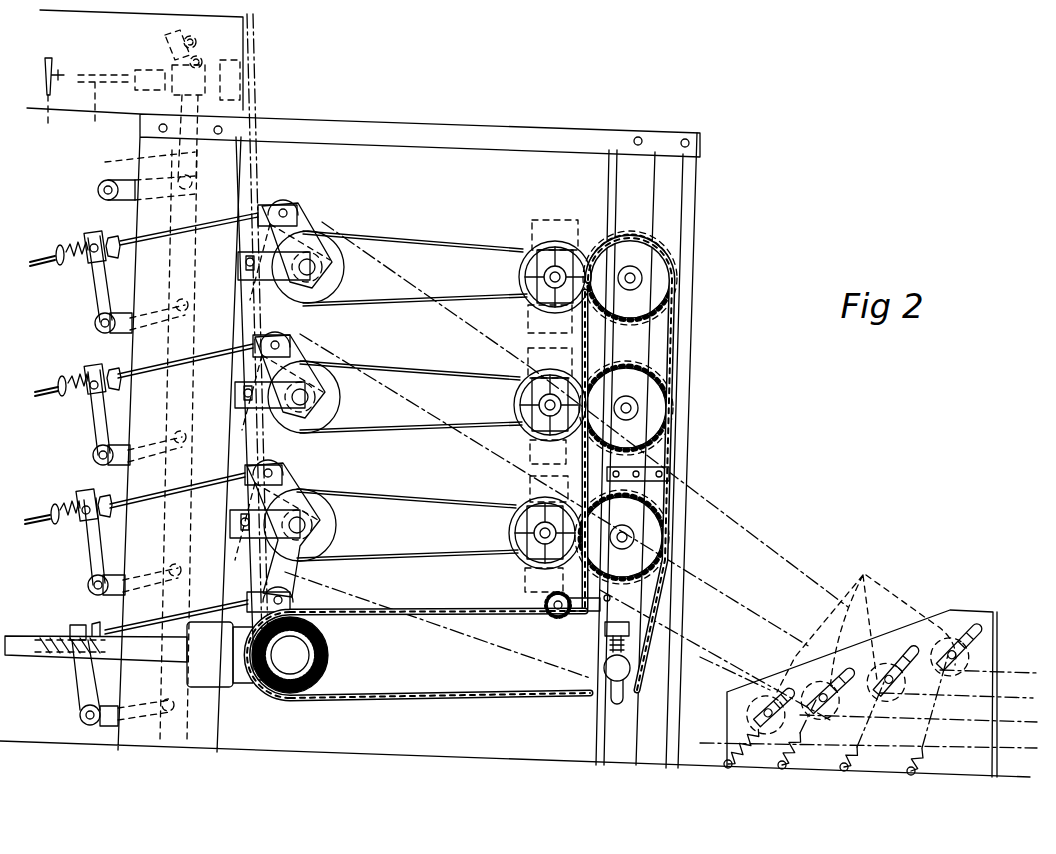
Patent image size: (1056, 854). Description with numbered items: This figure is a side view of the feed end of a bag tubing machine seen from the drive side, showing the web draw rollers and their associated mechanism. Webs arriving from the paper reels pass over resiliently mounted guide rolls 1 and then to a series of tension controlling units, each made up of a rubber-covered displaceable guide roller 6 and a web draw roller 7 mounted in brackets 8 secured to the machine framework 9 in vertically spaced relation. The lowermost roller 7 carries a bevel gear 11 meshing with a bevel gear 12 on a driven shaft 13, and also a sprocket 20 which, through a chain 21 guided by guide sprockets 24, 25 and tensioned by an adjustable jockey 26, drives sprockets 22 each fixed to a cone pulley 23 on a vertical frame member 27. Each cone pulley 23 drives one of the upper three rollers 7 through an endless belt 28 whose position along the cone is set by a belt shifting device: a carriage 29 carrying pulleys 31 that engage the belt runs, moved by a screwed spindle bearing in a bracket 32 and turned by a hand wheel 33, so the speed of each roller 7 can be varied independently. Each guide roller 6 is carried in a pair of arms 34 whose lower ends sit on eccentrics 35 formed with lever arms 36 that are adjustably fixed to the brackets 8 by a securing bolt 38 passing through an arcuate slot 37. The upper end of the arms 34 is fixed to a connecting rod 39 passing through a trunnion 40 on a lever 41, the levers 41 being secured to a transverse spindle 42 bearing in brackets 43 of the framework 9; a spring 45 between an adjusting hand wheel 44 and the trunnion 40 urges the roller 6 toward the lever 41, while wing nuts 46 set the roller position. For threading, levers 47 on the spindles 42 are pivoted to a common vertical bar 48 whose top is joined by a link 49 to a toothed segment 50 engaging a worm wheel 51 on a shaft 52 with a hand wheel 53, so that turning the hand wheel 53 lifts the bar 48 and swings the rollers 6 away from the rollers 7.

The guide rolls 1 is at (868, 665).
The displaceable guide roller 6 is at (292, 205).
The web draw roller 7 is at (338, 240).
The brackets 8 is at (265, 295).
The machine framework 9 is at (250, 160).
The bevel gear 11 is at (298, 698).
The bevel gear 12 is at (260, 700).
The driven shaft 13 is at (12, 648).
The sprocket 20 is at (340, 658).
The chain 21 is at (470, 698).
The sprockets 22 is at (673, 325).
The cone pulley 23 is at (672, 278).
The guide sprocket 24 is at (558, 616).
The guide sprocket 25 is at (672, 474).
The adjustable jockey 26 is at (632, 690).
The vertical frame member 27 is at (612, 183).
The endless belt 28 is at (448, 238).
The carriage 29 is at (545, 226).
The pulleys 31 is at (532, 448).
The bracket 32 is at (530, 495).
The hand wheel 33 is at (525, 275).
The arms 34 is at (305, 240).
The eccentrics 35 is at (322, 288).
The lever arms 36 is at (255, 275).
The arcuate slot 37 is at (245, 265).
The securing bolt 38 is at (246, 262).
The connecting rod 39 is at (170, 240).
The trunnion 40 is at (90, 262).
The lever 41 is at (90, 300).
The spindle 42 is at (95, 325).
The brackets 43 is at (118, 332).
The adjusting nut or hand wheel 44 is at (68, 258).
The spring 45 is at (62, 244).
The wing nuts 46 is at (110, 236).
The levers 47 is at (160, 318).
The vertical bar 48 is at (175, 270).
The link 49 is at (120, 160).
The toothed segment 50 is at (165, 38).
The worm wheel 51 is at (170, 70).
The shaft 52 is at (104, 111).
The hand wheel 53 is at (45, 103).